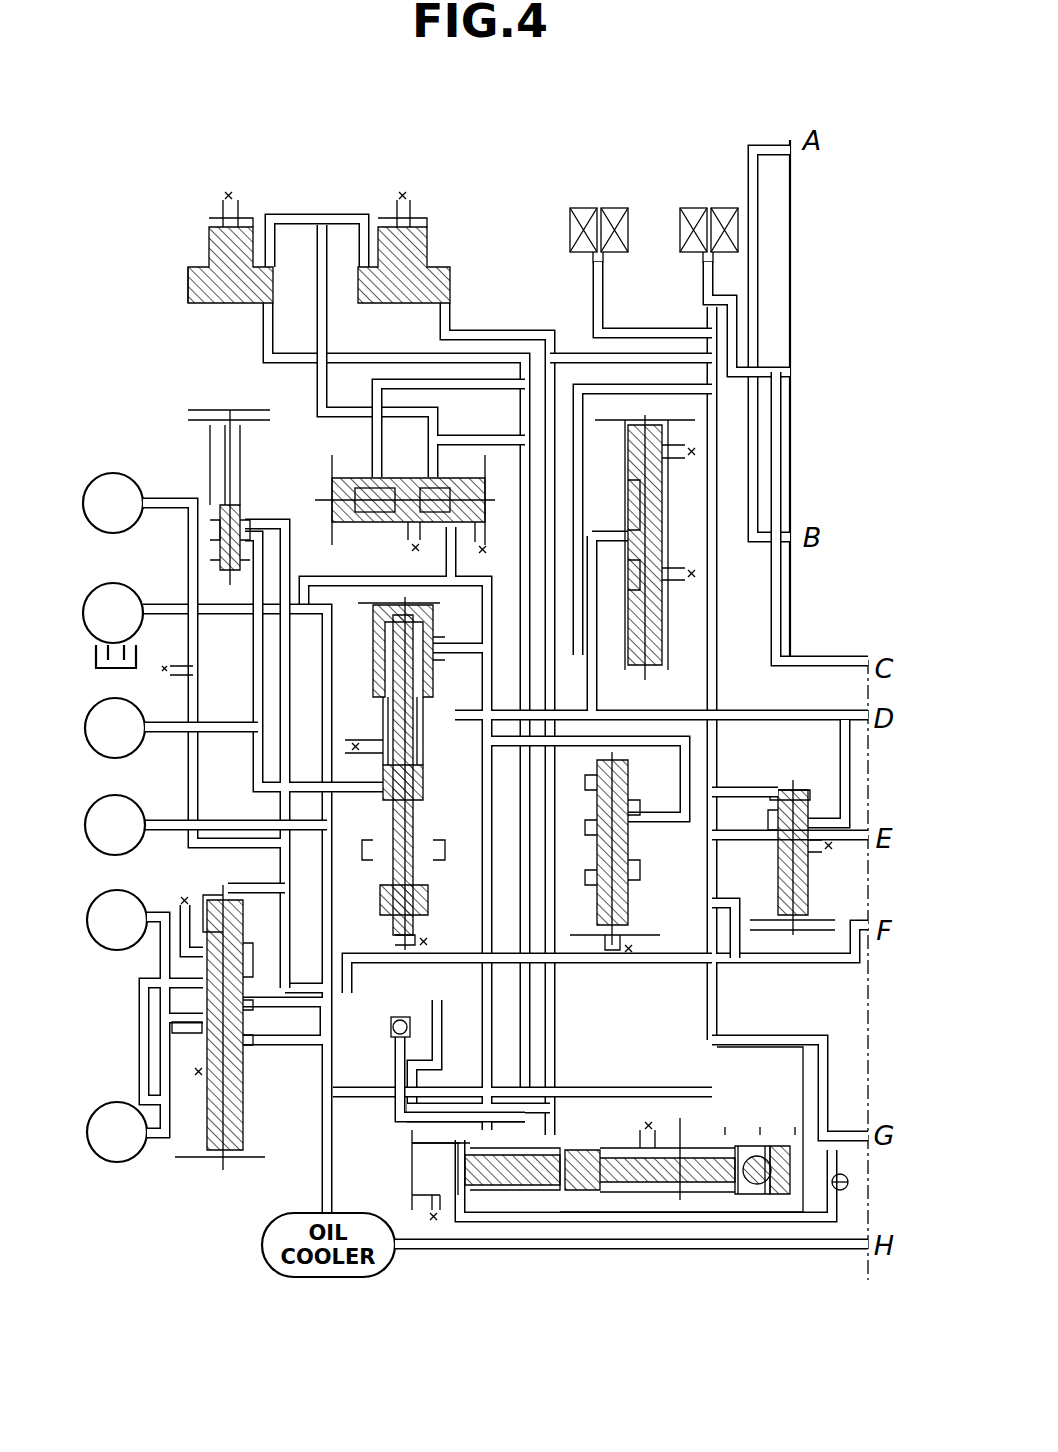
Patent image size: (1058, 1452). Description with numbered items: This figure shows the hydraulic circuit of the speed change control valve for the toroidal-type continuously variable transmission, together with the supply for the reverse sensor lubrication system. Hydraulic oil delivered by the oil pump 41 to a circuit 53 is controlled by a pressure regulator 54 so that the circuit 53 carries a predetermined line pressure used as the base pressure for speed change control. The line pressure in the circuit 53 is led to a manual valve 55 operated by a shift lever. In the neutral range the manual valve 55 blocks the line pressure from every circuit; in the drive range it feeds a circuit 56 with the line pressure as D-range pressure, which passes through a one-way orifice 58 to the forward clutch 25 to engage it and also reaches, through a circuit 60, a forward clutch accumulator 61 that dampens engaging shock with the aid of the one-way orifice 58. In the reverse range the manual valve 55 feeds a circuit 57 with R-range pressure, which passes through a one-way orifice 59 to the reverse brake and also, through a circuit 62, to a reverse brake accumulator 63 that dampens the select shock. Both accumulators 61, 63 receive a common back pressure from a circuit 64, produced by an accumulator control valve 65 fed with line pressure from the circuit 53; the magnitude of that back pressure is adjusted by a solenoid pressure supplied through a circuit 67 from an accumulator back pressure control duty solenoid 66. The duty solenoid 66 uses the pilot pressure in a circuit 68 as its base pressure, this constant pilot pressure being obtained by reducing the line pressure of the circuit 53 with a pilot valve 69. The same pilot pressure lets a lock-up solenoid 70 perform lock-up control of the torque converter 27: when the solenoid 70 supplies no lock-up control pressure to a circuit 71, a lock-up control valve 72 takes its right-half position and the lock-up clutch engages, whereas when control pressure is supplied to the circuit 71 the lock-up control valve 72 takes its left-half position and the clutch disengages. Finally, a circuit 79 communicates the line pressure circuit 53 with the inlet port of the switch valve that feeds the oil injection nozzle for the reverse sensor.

The forward clutch 25 is at (140, 804).
The torque converter 27 is at (110, 952).
The oil pump 41 is at (135, 590).
The circuit 53 is at (302, 588).
The pressure regulator 54 is at (362, 706).
The manual valve 55 is at (708, 1131).
The circuit 56 is at (375, 880).
The circuit 57 is at (825, 1130).
The one-way orifice 58 is at (391, 1032).
The one-way orifice 59 is at (822, 1195).
The circuit 60 is at (388, 356).
The forward clutch accumulator 61 is at (228, 320).
The circuit 62 is at (485, 328).
The reverse brake accumulator 63 is at (468, 269).
The circuit 64 is at (337, 214).
The accumulator control valve 65 is at (349, 459).
The accumulator back pressure control duty solenoid 66 is at (703, 206).
The circuit 67 is at (582, 396).
The circuit 68 is at (720, 442).
The pilot valve 69 is at (782, 786).
The lock-up solenoid 70 is at (582, 206).
The circuit 71 is at (780, 378).
The lock-up control valve 72 is at (256, 1148).
The circuit 79 is at (762, 238).